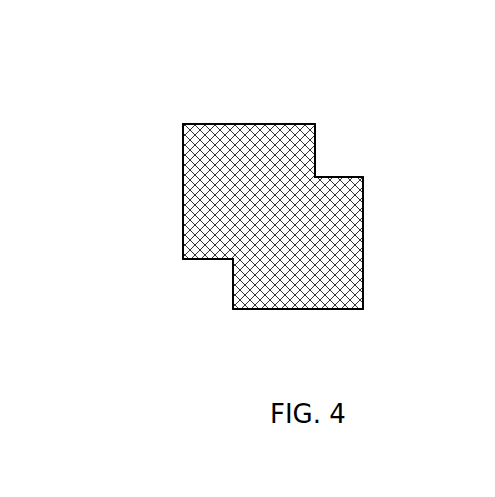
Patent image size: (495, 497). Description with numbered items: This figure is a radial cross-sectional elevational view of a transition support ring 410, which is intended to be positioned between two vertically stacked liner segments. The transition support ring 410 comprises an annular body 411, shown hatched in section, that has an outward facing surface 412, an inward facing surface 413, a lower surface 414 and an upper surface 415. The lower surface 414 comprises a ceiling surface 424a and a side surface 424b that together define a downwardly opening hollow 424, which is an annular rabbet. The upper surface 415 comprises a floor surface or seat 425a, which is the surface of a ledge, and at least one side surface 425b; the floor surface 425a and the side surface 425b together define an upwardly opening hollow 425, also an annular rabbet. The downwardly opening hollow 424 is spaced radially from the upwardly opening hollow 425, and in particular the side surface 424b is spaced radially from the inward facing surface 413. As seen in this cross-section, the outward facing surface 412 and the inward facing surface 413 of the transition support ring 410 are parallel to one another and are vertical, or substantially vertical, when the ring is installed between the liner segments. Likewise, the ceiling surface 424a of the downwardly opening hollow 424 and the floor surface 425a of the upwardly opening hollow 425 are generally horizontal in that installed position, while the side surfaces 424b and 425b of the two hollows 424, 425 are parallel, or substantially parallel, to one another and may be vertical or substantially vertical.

The transition support ring 410 is at (353, 47).
The annular body 411 is at (273, 216).
The outward facing surface 412 is at (183, 180).
The inward facing surface 413 is at (363, 237).
The lower surface 414 is at (315, 309).
The upper surface 415 is at (232, 124).
The downwardly opening hollow 424 is at (202, 300).
The ceiling surface 424a is at (213, 259).
The side surface 424b is at (233, 283).
The upwardly opening hollow 425 is at (341, 135).
The floor surface or seat 425a is at (347, 177).
The side surface 425b is at (315, 148).